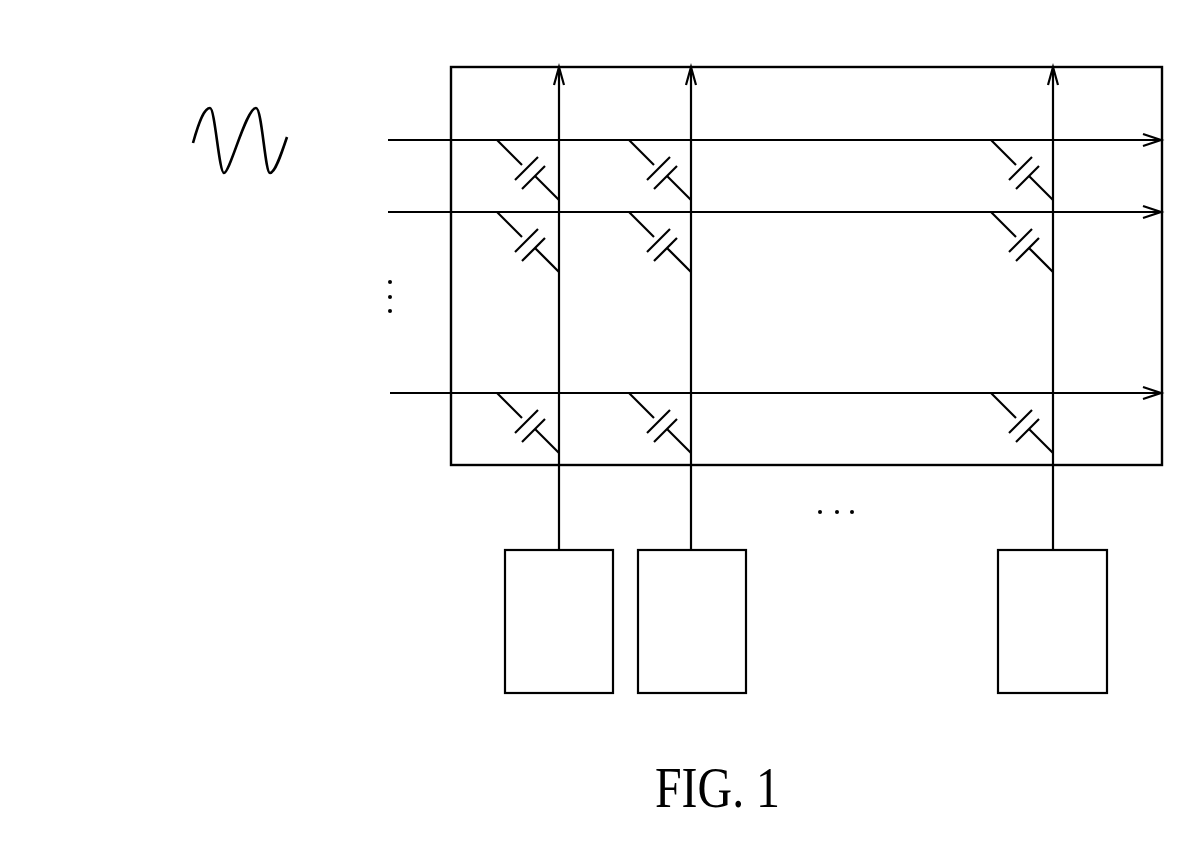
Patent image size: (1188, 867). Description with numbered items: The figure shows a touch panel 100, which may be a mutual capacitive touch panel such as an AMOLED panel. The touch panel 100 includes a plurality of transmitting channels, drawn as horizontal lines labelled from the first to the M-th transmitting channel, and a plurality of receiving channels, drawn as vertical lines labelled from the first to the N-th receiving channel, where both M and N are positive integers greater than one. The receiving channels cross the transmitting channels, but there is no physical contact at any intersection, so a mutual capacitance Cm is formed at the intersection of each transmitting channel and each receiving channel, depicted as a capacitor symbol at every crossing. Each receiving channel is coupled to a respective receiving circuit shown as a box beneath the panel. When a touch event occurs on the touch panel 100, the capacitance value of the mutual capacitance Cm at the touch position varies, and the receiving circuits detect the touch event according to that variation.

The touch panel 100 is at (1113, 67).
The mutual capacitance Cm is at (758, 296).